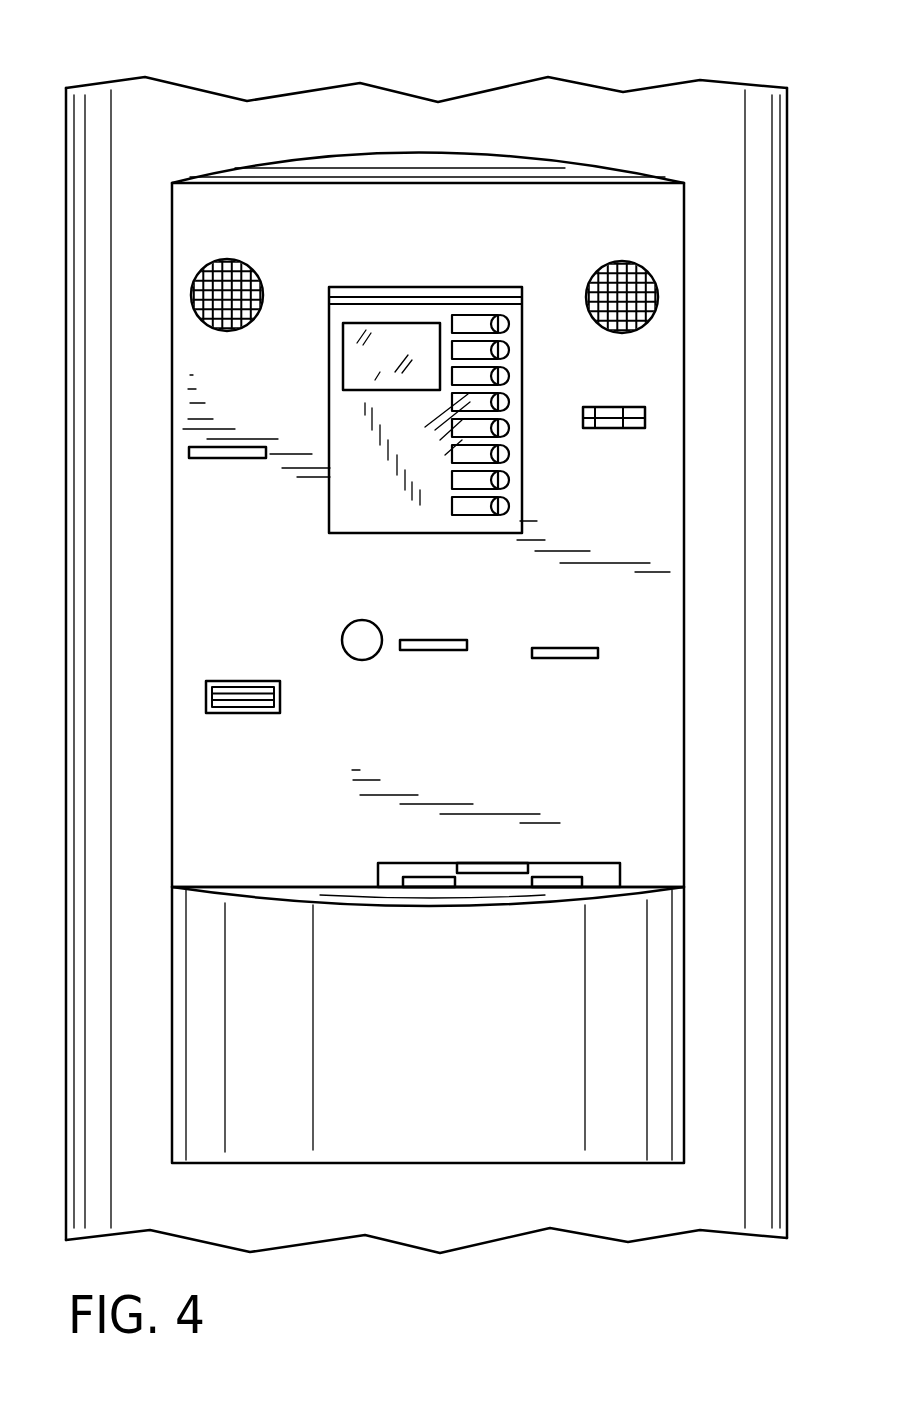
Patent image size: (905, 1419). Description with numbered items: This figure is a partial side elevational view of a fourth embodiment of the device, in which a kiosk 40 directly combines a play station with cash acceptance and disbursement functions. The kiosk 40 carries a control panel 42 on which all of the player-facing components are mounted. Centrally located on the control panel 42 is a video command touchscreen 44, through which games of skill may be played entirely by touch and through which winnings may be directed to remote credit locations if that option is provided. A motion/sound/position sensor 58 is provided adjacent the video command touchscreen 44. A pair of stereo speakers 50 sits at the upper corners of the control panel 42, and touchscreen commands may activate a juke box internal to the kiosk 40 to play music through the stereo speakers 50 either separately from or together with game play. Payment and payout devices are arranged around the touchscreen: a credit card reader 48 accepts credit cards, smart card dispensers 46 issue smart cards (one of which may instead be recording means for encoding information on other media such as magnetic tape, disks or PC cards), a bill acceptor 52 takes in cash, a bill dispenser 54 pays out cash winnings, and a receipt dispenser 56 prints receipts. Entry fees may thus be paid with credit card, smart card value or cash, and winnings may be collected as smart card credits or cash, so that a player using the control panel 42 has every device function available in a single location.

The kiosk 40 is at (636, 76).
The control panel 42 is at (685, 552).
The video command touchscreen 44 is at (513, 362).
The smart card dispenser 46 is at (230, 458).
The credit card reader 48 is at (645, 416).
The stereo speakers 50 is at (191, 295).
The bill (cash) acceptor 52 is at (252, 713).
The bill dispenser 54 is at (547, 862).
The receipt (printer) dispenser 56 is at (560, 660).
The motion/sound/position sensor 58 is at (343, 642).